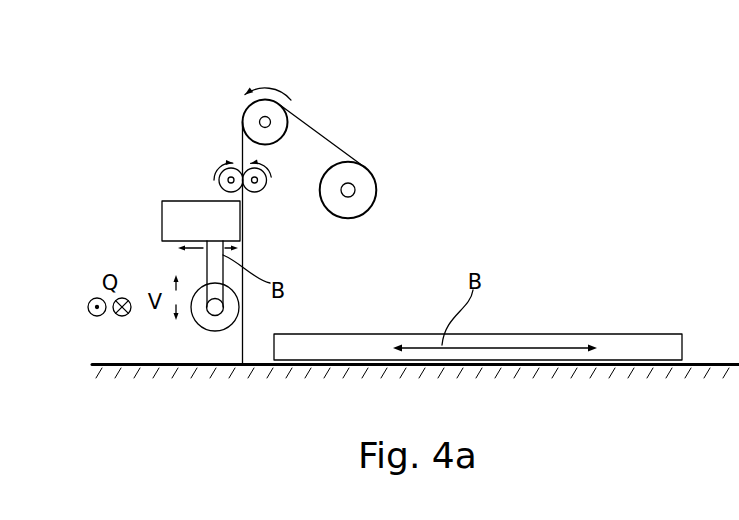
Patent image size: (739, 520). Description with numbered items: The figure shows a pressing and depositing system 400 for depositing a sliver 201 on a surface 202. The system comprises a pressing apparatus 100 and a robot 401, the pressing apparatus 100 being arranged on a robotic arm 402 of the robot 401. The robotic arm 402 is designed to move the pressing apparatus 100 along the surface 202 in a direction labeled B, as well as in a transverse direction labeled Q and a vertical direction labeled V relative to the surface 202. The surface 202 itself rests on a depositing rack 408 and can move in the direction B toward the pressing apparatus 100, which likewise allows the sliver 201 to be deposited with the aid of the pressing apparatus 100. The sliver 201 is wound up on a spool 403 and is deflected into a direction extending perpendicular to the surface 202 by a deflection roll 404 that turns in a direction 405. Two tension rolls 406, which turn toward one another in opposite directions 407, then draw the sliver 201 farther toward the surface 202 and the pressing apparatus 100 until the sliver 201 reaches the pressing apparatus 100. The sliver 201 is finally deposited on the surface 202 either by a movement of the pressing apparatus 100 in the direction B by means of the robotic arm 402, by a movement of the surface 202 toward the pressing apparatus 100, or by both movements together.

The pressing and depositing system 400 is at (80, 104).
The robot 401 is at (177, 200).
The robotic arm 402 is at (207, 273).
The spool 403 is at (377, 182).
The deflection roll 404 is at (258, 142).
The direction 405 is at (270, 83).
The tension rolls 406 is at (227, 192).
The opposite directions 407 is at (250, 157).
The depositing rack 408 is at (298, 367).
The sliver 201 is at (313, 129).
The surface 202 is at (628, 347).
The pressing apparatus 100 is at (195, 331).